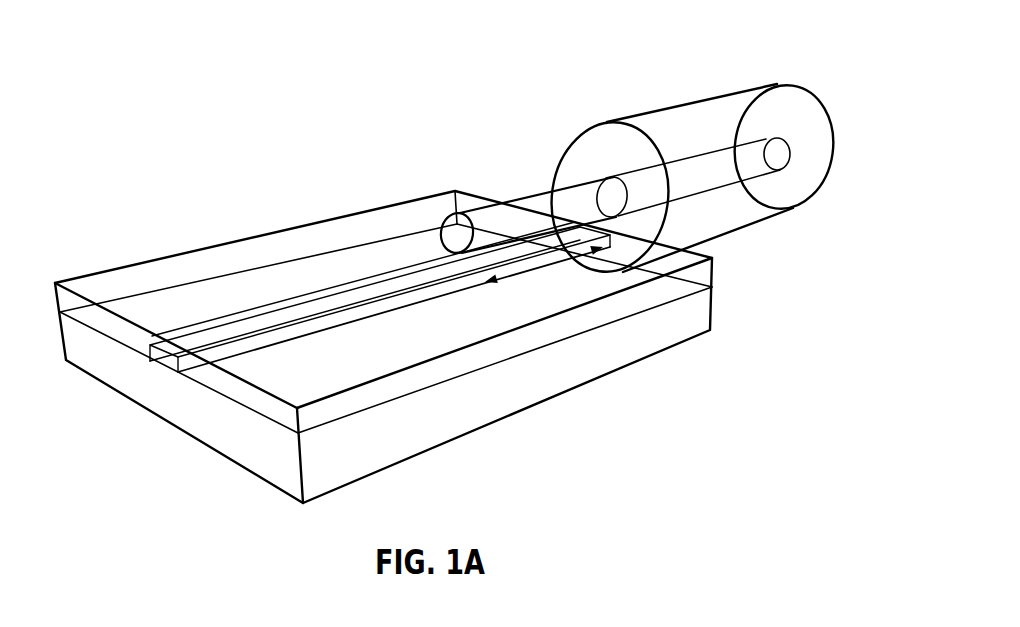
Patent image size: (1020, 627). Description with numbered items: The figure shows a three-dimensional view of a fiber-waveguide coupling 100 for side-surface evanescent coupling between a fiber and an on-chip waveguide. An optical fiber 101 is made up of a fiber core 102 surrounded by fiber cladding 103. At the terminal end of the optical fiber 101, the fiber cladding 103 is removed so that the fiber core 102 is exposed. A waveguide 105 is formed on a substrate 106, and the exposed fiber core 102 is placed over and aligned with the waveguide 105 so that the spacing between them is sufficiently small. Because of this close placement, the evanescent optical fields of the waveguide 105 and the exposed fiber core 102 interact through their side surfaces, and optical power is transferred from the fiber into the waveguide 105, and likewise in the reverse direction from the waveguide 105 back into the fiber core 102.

The fiber-waveguide coupling 100 is at (266, 68).
The optical fiber 101 is at (813, 145).
The fiber core 102 is at (543, 207).
The fiber cladding 103 is at (717, 107).
The waveguide 105 is at (167, 360).
The substrate 106 is at (191, 423).